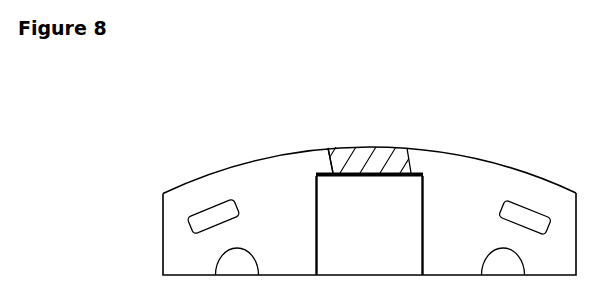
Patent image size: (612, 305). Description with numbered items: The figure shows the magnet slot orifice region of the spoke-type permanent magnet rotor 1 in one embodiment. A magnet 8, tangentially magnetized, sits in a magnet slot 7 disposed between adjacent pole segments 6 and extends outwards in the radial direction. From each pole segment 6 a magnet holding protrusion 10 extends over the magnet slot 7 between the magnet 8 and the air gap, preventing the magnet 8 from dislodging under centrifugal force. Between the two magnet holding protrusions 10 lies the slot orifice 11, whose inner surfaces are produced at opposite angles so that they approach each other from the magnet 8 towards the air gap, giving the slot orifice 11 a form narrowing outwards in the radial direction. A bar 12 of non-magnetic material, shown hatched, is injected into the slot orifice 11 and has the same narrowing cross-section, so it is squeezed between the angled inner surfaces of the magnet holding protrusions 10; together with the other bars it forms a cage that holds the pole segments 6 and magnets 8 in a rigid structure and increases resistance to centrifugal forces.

The rotor 1 is at (218, 142).
The pole segment 6 is at (507, 177).
The magnet slot 7 is at (423, 171).
The magnet 8 is at (402, 212).
The magnet holding protrusion 10 is at (326, 148).
The slot orifice 11 is at (329, 162).
The bar 12 is at (370, 152).